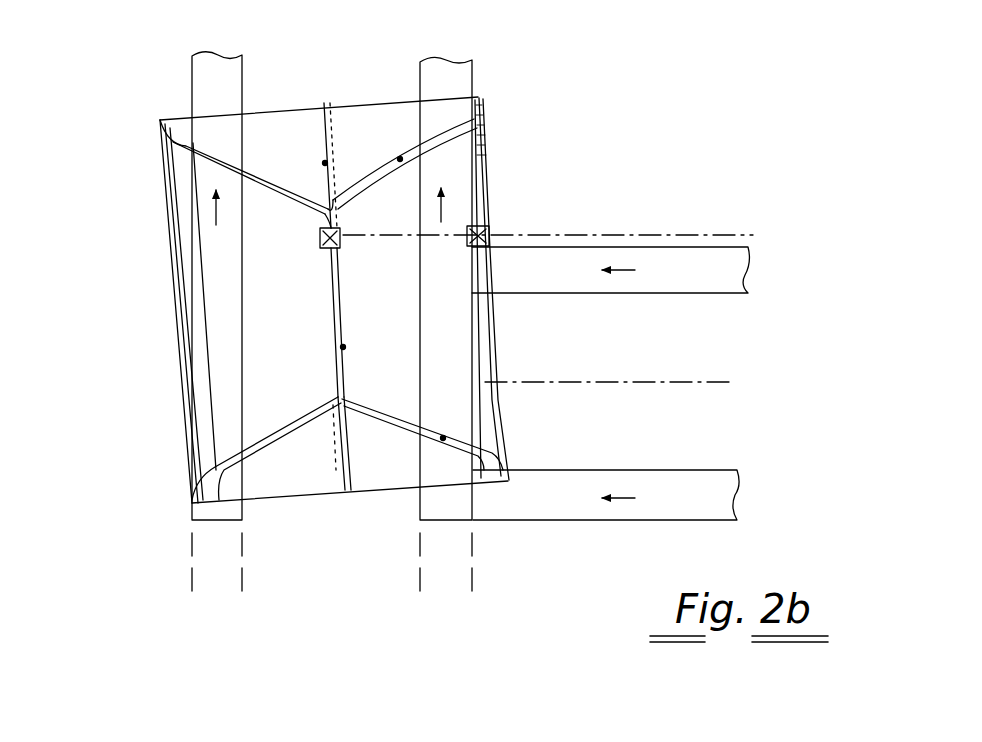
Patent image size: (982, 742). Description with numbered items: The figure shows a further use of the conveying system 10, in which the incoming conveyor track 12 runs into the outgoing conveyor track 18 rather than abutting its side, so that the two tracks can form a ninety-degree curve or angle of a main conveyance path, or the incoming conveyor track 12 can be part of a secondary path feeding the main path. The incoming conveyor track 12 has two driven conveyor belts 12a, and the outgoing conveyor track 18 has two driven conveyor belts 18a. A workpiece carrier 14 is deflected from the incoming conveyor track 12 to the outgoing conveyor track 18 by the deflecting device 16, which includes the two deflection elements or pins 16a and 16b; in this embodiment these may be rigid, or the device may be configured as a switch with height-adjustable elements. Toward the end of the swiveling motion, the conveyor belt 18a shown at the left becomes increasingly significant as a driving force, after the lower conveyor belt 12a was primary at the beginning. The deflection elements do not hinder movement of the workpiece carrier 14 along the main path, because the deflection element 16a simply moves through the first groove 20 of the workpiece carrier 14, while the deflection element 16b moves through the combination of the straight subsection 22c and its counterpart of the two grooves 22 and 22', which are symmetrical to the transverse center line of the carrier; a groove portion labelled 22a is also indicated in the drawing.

The conveying system 10 is at (672, 100).
The incoming conveyor track 12 is at (737, 230).
The conveyor belt 12a is at (723, 480).
The workpiece carrier 14 is at (160, 166).
The deflecting device 16 is at (512, 203).
The deflection element 16a is at (468, 246).
The deflection element 16b is at (322, 248).
The outgoing conveyor track 18 is at (487, 61).
The conveyor belt 18a is at (440, 64).
The first groove 20 is at (482, 152).
The groove 22 is at (405, 141).
The guide track section 22a is at (320, 165).
The straight subsection 22c is at (343, 348).
The groove 22' is at (429, 501).